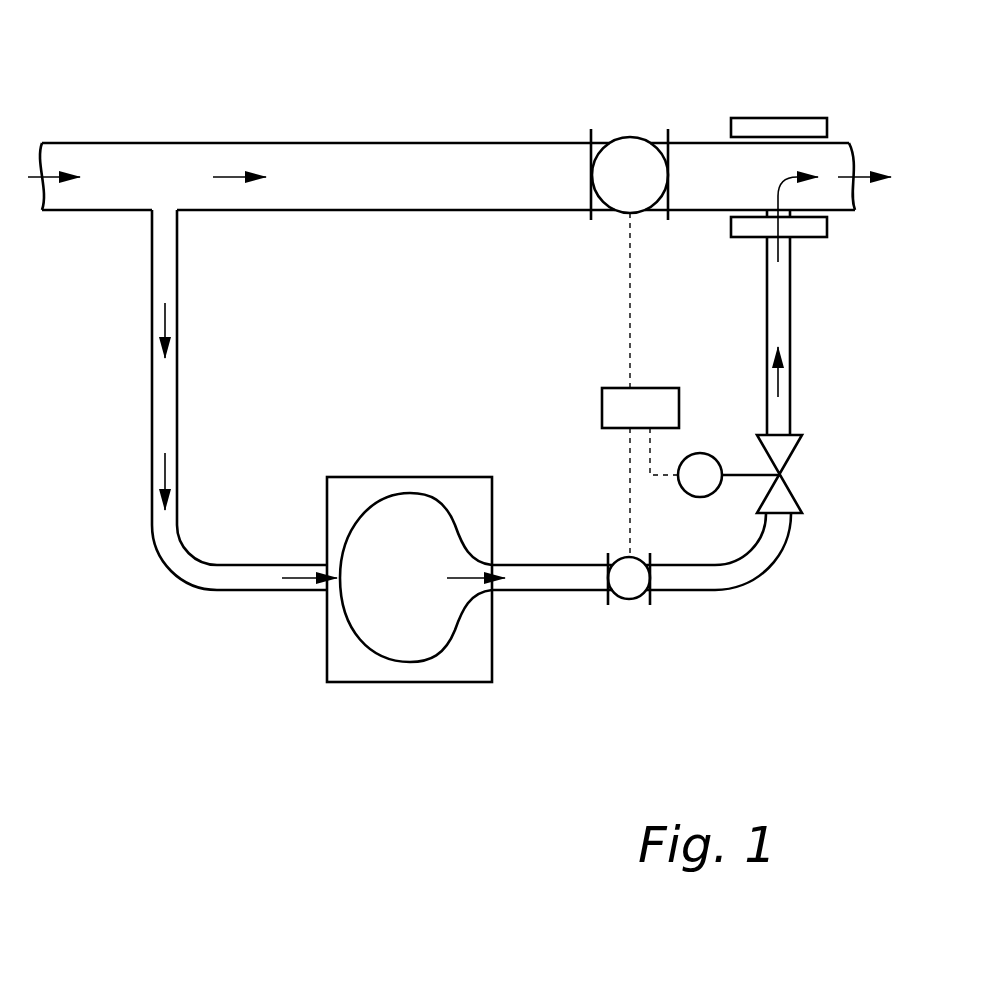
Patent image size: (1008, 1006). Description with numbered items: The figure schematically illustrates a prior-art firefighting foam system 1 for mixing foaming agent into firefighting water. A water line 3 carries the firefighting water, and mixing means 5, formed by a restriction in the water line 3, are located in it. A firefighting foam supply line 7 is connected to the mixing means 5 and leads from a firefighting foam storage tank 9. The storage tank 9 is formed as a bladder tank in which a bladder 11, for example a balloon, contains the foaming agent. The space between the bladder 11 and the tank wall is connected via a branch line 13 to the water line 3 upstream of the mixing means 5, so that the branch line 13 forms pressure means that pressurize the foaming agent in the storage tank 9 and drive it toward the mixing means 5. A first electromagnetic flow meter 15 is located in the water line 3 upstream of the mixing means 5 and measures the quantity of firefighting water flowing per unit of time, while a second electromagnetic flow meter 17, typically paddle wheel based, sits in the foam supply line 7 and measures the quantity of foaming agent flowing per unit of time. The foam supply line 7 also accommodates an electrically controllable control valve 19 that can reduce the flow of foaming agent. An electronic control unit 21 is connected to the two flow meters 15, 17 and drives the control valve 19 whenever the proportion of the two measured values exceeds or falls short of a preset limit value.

The firefighting foam system 1 is at (225, 794).
The water line 3 is at (310, 142).
The mixing means 5 is at (763, 118).
The firefighting foam supply line 7 is at (712, 592).
The firefighting foam storage tank 9 is at (463, 477).
The bladder 11 is at (343, 628).
The branch line 13 is at (148, 520).
The first electromagnetic flow meter 15 is at (622, 138).
The second electromagnetic flow meter 17 is at (624, 603).
The control valve 19 is at (790, 460).
The electronic control unit 21 is at (658, 388).